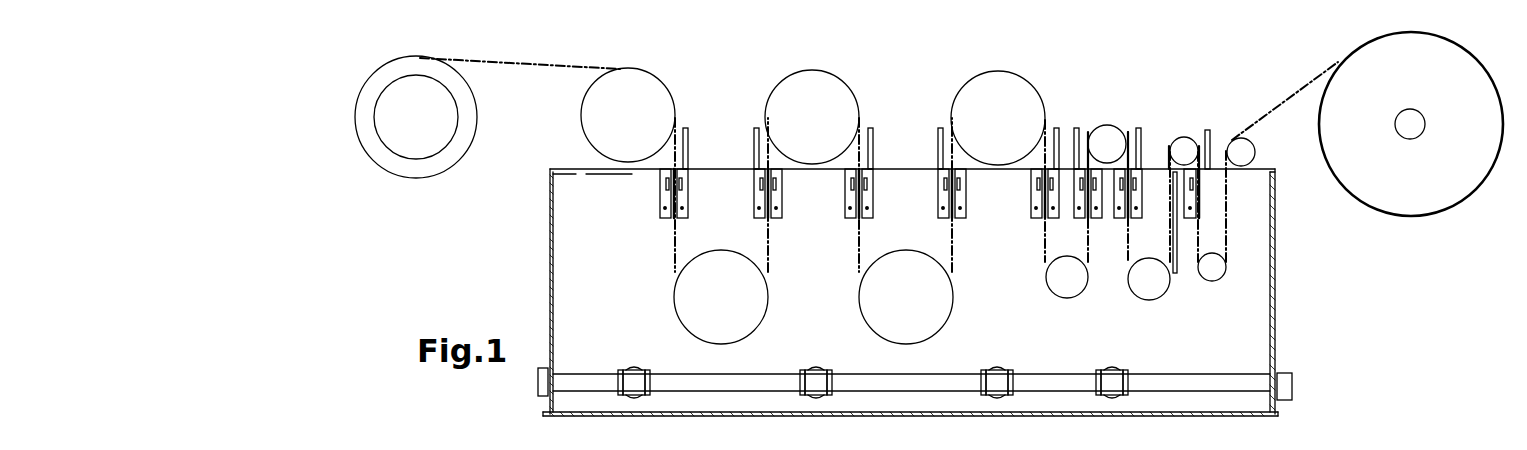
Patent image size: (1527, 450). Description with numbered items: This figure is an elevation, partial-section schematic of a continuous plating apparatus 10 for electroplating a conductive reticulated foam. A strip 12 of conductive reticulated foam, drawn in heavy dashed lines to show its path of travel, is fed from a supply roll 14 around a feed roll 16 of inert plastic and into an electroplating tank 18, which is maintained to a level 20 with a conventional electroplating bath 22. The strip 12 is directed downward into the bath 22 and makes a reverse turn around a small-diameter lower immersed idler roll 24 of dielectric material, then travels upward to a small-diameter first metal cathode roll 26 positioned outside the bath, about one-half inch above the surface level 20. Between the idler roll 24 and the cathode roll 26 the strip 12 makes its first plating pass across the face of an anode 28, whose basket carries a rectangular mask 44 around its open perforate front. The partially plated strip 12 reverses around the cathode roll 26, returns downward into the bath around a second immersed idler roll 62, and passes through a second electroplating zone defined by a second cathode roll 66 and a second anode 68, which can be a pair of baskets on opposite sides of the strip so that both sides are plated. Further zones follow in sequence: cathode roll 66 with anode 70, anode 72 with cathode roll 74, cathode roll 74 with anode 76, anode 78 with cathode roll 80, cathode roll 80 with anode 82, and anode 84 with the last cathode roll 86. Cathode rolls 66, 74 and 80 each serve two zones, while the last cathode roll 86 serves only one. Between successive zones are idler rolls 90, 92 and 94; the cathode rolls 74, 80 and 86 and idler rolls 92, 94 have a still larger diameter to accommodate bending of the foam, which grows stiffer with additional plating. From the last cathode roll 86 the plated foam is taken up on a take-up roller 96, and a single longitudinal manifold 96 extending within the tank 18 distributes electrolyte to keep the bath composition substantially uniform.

The continuous plating apparatus 10 is at (1142, 92).
The strip of conductive reticulated foam 12 is at (1277, 102).
The supply roll 14 is at (1420, 172).
The feed roll 16 is at (1243, 150).
The electroplating tank 18 is at (1273, 332).
The level 20 is at (588, 178).
The electroplating bath 22 is at (1255, 292).
The lower immersed idler roll 24 is at (1213, 277).
The first metal cathode roll 26 is at (1185, 152).
The anode 28 is at (1197, 208).
The mask 44 is at (1179, 273).
The second immersed idler roll 62 is at (1142, 282).
The second cathode roll 66 is at (1103, 140).
The second anode 68 is at (1135, 213).
The anode 70 is at (1095, 218).
The anode 72 is at (1037, 198).
The cathode roll 74 is at (980, 110).
The anode 76 is at (946, 201).
The anode 78 is at (870, 203).
The cathode roll 80 is at (828, 100).
The anode 82 is at (778, 200).
The anode 84 is at (685, 197).
The last cathode roll 86 is at (633, 107).
The idler roll 90 is at (1058, 282).
The idler roll 92 is at (893, 318).
The idler roll 94 is at (725, 315).
The take-up roller 96 is at (408, 143).